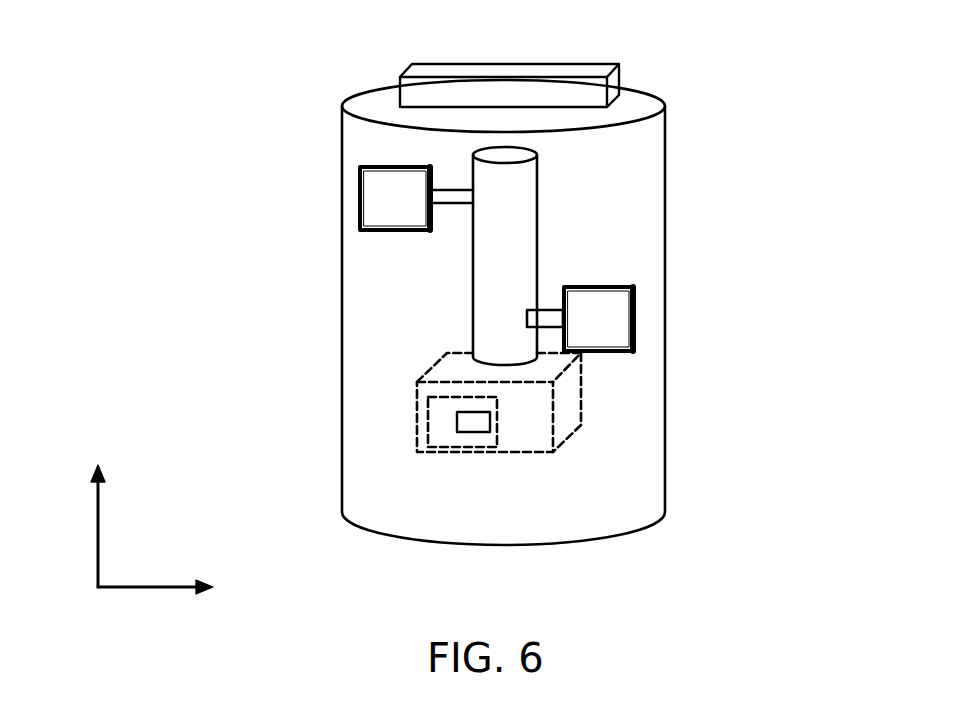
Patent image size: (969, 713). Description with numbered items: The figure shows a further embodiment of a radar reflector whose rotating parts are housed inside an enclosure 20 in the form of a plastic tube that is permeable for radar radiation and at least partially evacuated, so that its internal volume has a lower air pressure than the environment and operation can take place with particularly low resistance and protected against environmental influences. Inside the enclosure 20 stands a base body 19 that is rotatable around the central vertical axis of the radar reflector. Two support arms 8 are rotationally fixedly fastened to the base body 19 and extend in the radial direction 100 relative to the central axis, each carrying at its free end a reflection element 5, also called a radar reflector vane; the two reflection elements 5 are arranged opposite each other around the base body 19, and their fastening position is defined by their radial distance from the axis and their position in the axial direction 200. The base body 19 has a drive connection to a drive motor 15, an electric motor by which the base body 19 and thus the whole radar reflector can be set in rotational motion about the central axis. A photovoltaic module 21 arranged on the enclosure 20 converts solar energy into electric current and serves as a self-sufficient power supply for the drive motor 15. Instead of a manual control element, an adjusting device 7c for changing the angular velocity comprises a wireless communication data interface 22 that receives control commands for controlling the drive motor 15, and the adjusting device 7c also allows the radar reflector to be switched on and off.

The radial direction 100 is at (157, 590).
The axial direction 200 is at (98, 522).
The enclosure 20 is at (664, 183).
The photovoltaic module 21 is at (527, 82).
The base body 19 is at (517, 202).
The reflection element 5 is at (388, 222).
The support arm 8 is at (437, 203).
The drive motor 15 is at (563, 427).
The adjusting device 7c is at (434, 432).
The wireless communication data interface 22 is at (475, 423).